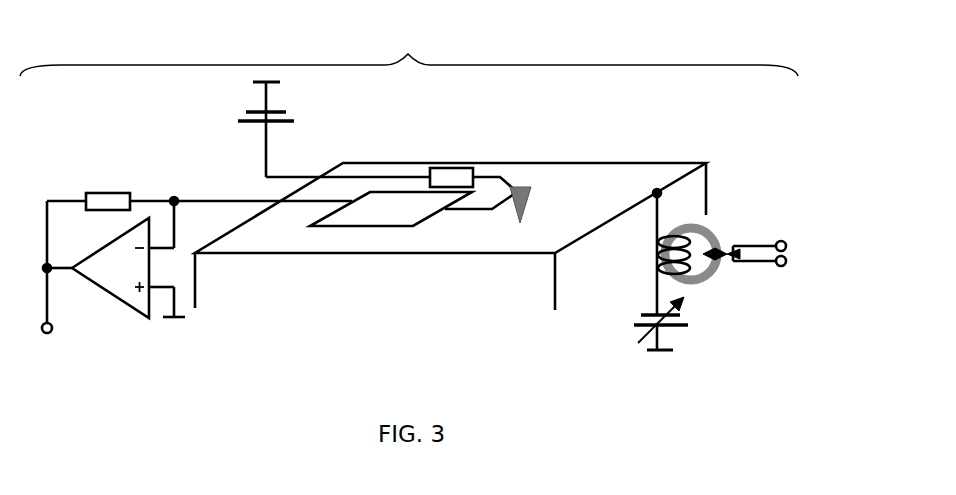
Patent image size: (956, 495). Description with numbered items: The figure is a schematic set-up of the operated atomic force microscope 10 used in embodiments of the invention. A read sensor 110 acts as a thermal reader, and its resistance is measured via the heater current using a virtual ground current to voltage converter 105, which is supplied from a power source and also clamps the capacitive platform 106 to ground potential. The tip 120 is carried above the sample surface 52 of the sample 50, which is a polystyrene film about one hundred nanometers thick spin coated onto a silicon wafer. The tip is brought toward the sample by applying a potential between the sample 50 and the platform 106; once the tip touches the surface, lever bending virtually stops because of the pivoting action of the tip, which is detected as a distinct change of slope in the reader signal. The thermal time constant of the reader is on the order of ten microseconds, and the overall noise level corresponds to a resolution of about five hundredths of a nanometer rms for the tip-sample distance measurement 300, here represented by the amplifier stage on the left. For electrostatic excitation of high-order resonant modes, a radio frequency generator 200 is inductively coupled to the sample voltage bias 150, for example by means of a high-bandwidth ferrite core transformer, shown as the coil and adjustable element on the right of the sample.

The atomic force microscope 10 is at (409, 47).
The sample 50 is at (477, 288).
The sample surface 52 is at (529, 250).
The virtual ground current to voltage converter 105 is at (240, 110).
The capacitive platform 106 is at (388, 208).
The read sensor 110 is at (450, 177).
The tip 120 is at (527, 188).
The sample voltage bias 150 is at (627, 330).
The radio frequency generator 200 is at (710, 285).
The tip-sample distance measurement 300 is at (137, 322).